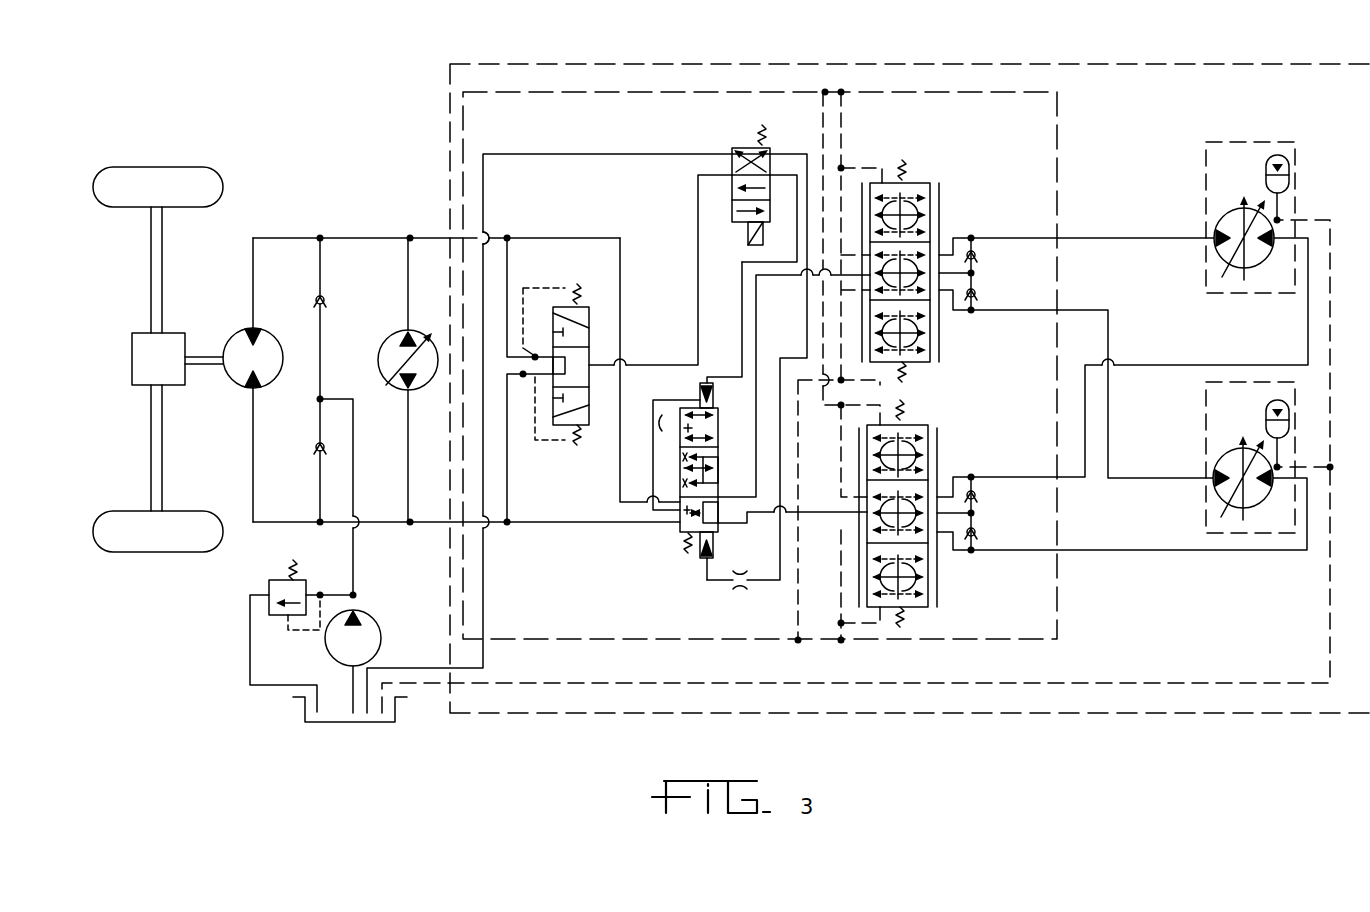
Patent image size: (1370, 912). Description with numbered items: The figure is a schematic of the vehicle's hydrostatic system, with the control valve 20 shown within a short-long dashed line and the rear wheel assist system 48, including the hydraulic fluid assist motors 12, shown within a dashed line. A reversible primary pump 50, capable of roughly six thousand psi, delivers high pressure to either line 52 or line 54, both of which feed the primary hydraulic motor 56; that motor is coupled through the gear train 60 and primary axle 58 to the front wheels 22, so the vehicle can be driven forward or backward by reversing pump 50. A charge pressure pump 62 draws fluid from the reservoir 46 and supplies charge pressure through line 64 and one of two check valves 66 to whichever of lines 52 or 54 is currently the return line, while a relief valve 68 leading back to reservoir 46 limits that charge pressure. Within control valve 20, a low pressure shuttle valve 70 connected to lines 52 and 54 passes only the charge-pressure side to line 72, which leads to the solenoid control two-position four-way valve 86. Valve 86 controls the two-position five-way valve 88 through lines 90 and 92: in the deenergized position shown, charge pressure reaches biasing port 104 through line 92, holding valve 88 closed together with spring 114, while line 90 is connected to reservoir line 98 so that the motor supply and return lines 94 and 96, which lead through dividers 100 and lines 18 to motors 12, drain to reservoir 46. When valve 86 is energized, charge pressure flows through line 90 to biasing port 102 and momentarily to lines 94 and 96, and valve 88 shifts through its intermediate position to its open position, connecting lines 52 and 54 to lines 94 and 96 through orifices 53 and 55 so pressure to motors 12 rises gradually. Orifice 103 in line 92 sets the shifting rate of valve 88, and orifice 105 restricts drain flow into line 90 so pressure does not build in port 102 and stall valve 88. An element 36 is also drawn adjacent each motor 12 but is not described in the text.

The hydraulic fluid assist motors 12 is at (1206, 192).
The motor hydraulic supply and return lines 18 is at (1125, 240).
The control valve 20 is at (752, 92).
The front wheels 22 is at (160, 167).
The accumulator 36 is at (1285, 158).
The reservoir 46 is at (305, 712).
The rear wheel assist system 48 is at (978, 64).
The primary pump 50 is at (385, 348).
The line 52 is at (360, 238).
The orifice 53 is at (680, 453).
The line 54 is at (370, 523).
The orifice 55 is at (680, 480).
The primary hydraulic motor 56 is at (276, 335).
The primary axle 58 is at (160, 290).
The gear train 60 is at (132, 350).
The charge pressure pump 62 is at (380, 640).
The line 64 is at (356, 442).
The check valves 66 is at (325, 300).
The relief valve 68 is at (269, 590).
The low pressure shuttle valve 70 is at (590, 320).
The line 72 is at (698, 205).
The solenoid control two-position four-way valve 86 is at (732, 150).
The two-position five-way valve 88 is at (662, 541).
The line 90 is at (742, 305).
The line 92 is at (780, 165).
The motor supply and return line 94 is at (758, 347).
The motor supply and return line 96 is at (767, 517).
The reservoir line 98 is at (575, 154).
The dividers 100 is at (957, 170).
The biasing port 102 is at (700, 385).
The orifice 103 is at (740, 592).
The biasing port 104 is at (702, 558).
The orifice 105 is at (647, 427).
The spring 114 is at (687, 545).